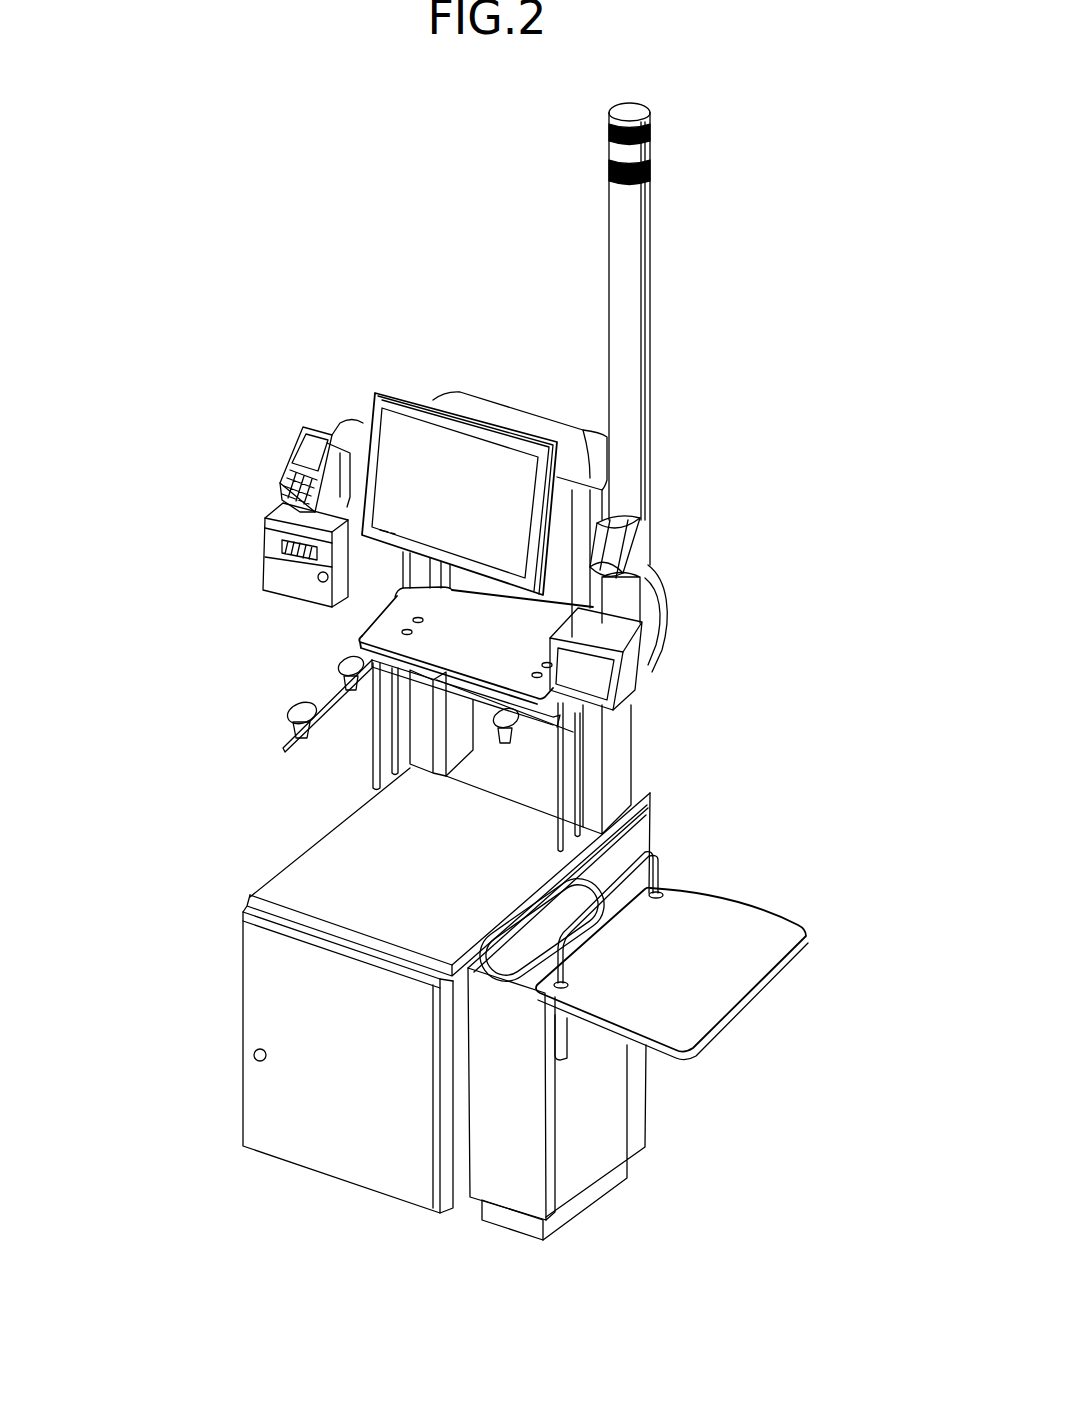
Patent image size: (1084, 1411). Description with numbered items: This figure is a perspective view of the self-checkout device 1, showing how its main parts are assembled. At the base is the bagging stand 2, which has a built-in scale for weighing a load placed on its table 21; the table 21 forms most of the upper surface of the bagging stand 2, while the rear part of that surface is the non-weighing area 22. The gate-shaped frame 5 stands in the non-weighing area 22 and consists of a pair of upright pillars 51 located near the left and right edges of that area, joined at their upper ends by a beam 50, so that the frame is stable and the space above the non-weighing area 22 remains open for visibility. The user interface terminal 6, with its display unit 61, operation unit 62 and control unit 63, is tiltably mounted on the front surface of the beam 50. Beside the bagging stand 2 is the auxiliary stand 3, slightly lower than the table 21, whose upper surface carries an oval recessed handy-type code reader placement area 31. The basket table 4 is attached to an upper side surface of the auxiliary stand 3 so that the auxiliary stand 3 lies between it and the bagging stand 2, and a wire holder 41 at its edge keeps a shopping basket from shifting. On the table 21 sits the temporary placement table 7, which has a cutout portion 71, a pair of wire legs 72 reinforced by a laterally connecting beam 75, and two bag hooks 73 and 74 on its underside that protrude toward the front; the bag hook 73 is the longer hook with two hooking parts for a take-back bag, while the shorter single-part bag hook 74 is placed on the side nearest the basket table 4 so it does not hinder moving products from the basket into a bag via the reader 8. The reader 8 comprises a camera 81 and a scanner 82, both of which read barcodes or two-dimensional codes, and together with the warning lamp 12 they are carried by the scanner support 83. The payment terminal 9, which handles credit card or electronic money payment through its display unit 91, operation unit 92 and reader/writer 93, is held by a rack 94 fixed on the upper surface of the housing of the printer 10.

The self-checkout device 1 is at (372, 159).
The bagging stand 2 is at (322, 1145).
The table 21 is at (330, 857).
The non-weighing area 22 is at (540, 797).
The auxiliary stand 3 is at (528, 1170).
The handy-type code reader placement area 31 is at (495, 955).
The basket table 4 is at (745, 922).
The wire holder 41 is at (660, 870).
The gate-shaped frame 5 is at (560, 400).
The beam 50 is at (573, 412).
The pillars 51 is at (612, 767).
The user interface (UI) terminal 6 is at (388, 406).
The display unit 61 is at (462, 462).
The operation unit 62 is at (508, 485).
The control unit 63 is at (416, 452).
The temporary placement table 7 is at (358, 642).
The cutout portion 71 is at (392, 605).
The legs 72 is at (372, 752).
The bag hook 73 is at (332, 697).
The bag hook 74 is at (548, 735).
The beam 75 is at (405, 765).
The reader 8 is at (697, 591).
The camera 81 is at (600, 668).
The scanner 82 is at (608, 542).
The scanner support 83 is at (664, 614).
The payment terminal 9 is at (318, 458).
The display unit 91 is at (300, 462).
The operation unit 92 is at (290, 498).
The reader/writer 93 is at (280, 516).
The rack 94 is at (348, 490).
The printer 10 is at (272, 567).
The warning lamp 12 is at (627, 246).